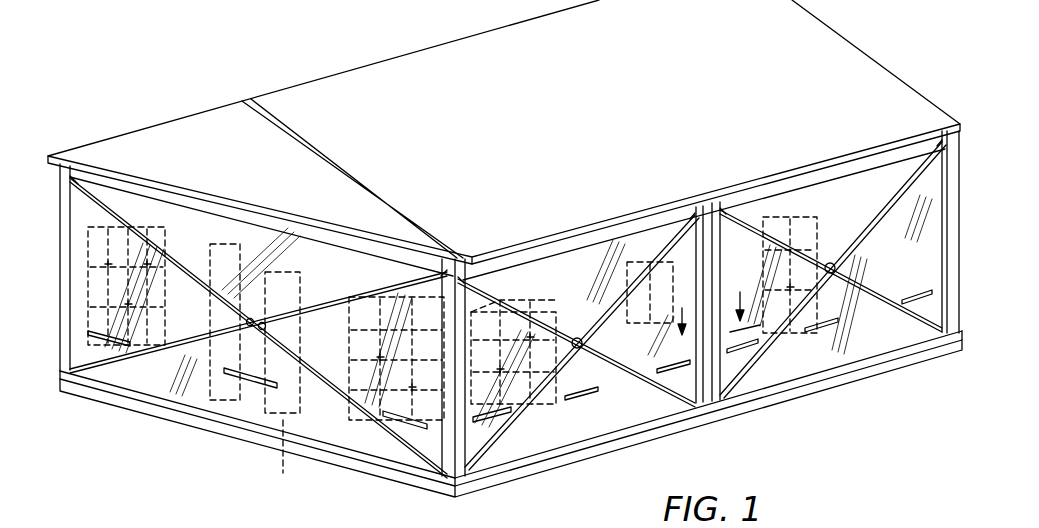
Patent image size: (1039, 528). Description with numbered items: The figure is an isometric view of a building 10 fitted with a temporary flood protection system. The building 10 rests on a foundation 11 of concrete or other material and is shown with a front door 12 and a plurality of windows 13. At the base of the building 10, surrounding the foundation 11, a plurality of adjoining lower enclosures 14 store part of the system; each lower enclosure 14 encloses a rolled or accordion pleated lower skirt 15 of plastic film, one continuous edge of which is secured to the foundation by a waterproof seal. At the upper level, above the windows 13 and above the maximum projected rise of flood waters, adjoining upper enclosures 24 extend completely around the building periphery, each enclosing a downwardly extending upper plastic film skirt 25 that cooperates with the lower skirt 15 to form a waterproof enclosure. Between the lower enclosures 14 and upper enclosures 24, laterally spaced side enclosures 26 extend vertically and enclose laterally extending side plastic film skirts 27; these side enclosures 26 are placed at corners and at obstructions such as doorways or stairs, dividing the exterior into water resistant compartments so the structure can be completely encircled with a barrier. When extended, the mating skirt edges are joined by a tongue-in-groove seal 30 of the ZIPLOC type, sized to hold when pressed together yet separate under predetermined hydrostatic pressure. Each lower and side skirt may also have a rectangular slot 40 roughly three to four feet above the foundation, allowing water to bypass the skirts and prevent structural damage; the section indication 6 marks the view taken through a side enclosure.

The building 10 is at (490, 262).
The foundation 11 is at (504, 420).
The front door 12 is at (283, 472).
The windows 13 is at (78, 290).
The lower enclosures 14 is at (117, 392).
The lower skirt 15 is at (890, 390).
The upper enclosures 24 is at (261, 214).
The upper plastic film skirt 25 is at (192, 224).
The side enclosures 26 is at (62, 233).
The side plastic film skirts 27 is at (87, 210).
The tongue-in-groove seal 30 is at (203, 296).
The rectangular slot 40 is at (88, 334).
The section line arrow 6 is at (709, 302).